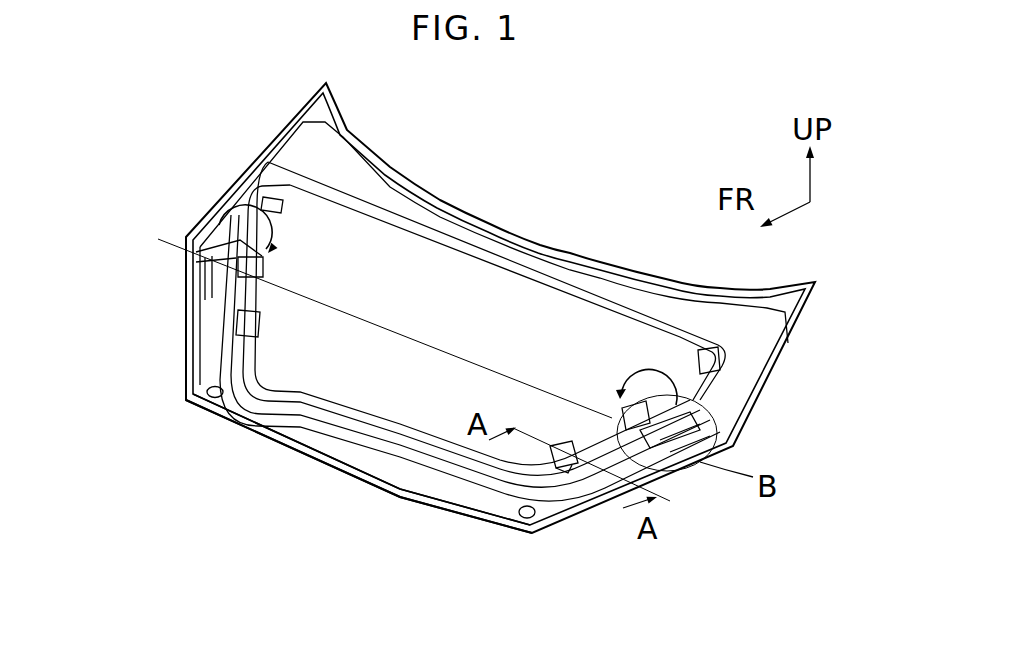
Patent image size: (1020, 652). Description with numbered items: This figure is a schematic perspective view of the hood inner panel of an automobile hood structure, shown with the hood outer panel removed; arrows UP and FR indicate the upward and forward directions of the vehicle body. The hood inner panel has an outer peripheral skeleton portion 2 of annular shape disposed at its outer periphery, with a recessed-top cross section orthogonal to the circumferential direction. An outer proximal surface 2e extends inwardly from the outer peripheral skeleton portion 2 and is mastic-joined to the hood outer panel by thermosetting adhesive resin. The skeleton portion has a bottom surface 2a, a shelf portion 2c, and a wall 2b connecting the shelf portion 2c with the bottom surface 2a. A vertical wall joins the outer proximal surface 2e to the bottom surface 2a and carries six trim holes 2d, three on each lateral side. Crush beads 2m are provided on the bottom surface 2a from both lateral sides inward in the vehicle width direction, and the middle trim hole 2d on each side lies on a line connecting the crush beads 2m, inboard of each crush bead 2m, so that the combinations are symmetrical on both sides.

The outer peripheral skeleton portion 2 is at (780, 444).
The bottom surface 2a is at (467, 498).
The wall 2b is at (410, 465).
The shelf portion 2c is at (338, 472).
The trim hole 2d is at (217, 183).
The outer proximal surface 2e is at (475, 288).
The crush bead 2m is at (183, 270).